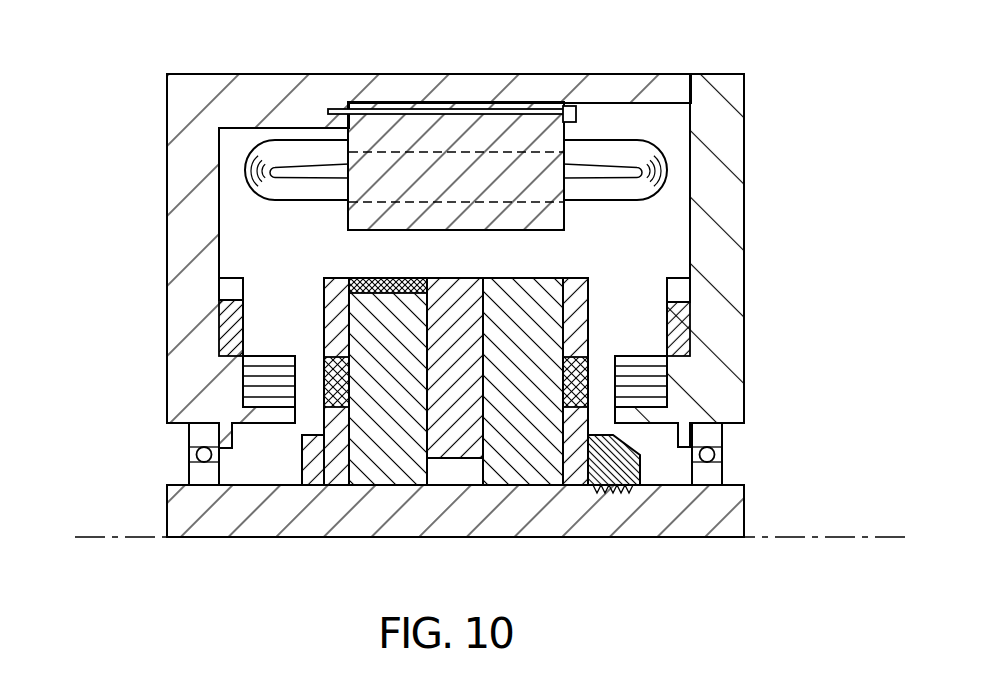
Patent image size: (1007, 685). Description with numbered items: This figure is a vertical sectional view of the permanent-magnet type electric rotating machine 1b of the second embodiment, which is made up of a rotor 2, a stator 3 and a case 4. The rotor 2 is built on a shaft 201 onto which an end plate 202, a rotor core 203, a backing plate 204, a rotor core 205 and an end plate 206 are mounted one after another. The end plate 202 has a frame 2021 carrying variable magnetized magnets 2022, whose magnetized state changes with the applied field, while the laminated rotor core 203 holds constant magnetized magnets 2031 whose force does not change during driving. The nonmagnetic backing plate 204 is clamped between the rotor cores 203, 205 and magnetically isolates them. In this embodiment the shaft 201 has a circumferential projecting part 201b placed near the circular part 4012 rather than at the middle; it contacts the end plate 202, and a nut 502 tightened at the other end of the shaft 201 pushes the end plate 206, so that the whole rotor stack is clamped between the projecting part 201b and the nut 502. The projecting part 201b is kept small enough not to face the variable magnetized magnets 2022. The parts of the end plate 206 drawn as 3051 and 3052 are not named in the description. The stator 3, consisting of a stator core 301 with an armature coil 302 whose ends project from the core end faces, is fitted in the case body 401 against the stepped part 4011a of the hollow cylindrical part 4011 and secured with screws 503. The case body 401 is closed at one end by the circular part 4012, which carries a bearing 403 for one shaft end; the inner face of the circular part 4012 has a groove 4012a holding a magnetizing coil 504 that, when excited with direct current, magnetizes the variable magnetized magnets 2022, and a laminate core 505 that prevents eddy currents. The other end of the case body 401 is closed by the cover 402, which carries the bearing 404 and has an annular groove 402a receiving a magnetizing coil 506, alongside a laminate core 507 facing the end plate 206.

The permanent-magnet type electric rotating machine 1b is at (481, 296).
The rotor 2 is at (457, 403).
The stator 3 is at (456, 141).
The case 4 is at (433, 238).
The shaft 201 is at (490, 498).
The projecting part 201b is at (224, 448).
The end plate 202 is at (305, 361).
The frame 2021 is at (331, 314).
The variable magnetized magnets 2022 is at (323, 368).
The rotor core 203 is at (388, 406).
The constant magnetized magnets 2031 is at (385, 264).
The backing plate 204 is at (448, 443).
The rotor core 205 is at (534, 472).
The end plate 206 is at (607, 360).
The stator core 301 is at (500, 118).
The armature coil 302 is at (290, 204).
The sleeve upper portion 3051 is at (590, 305).
The sleeve seal portion 3052 is at (592, 366).
The case body 401 is at (374, 261).
The cylindrical part 4011 is at (298, 94).
The stepped part 4011a is at (348, 108).
The circular part 4012 is at (194, 288).
The groove 4012a is at (220, 321).
The cover 402 is at (712, 260).
The annular groove 402a is at (690, 328).
The bearing 403 is at (192, 469).
The bearing 404 is at (724, 442).
The nut 502 is at (632, 470).
The screws 503 is at (578, 118).
The magnetizing coil 504 is at (258, 274).
The laminate core 505 is at (243, 390).
The magnetizing coil 506 is at (669, 298).
The laminate core 507 is at (667, 388).